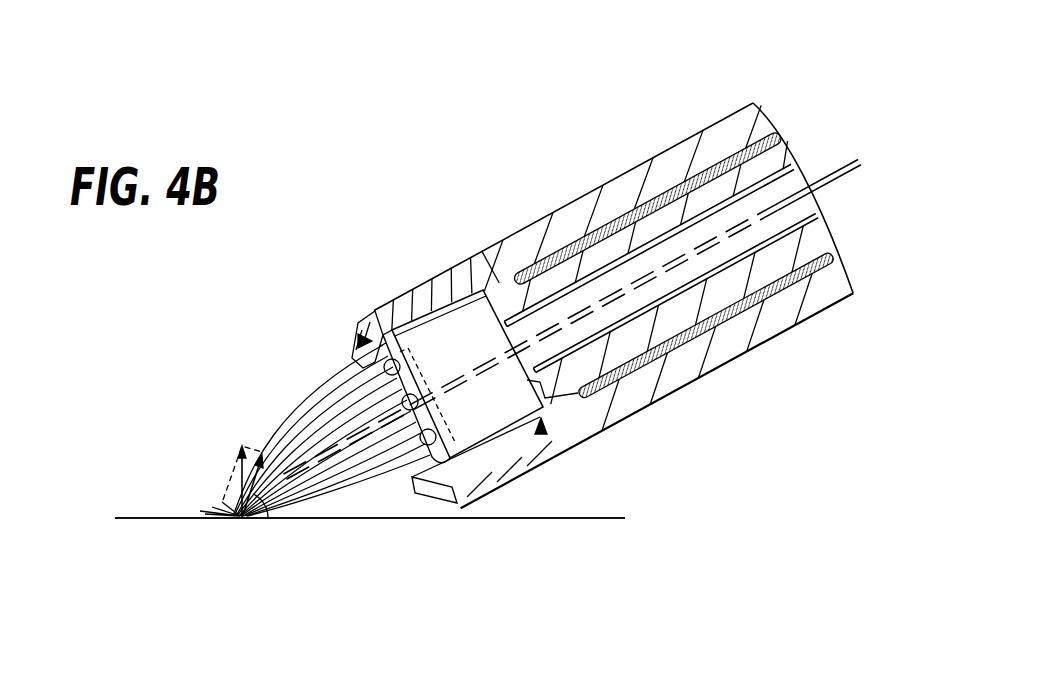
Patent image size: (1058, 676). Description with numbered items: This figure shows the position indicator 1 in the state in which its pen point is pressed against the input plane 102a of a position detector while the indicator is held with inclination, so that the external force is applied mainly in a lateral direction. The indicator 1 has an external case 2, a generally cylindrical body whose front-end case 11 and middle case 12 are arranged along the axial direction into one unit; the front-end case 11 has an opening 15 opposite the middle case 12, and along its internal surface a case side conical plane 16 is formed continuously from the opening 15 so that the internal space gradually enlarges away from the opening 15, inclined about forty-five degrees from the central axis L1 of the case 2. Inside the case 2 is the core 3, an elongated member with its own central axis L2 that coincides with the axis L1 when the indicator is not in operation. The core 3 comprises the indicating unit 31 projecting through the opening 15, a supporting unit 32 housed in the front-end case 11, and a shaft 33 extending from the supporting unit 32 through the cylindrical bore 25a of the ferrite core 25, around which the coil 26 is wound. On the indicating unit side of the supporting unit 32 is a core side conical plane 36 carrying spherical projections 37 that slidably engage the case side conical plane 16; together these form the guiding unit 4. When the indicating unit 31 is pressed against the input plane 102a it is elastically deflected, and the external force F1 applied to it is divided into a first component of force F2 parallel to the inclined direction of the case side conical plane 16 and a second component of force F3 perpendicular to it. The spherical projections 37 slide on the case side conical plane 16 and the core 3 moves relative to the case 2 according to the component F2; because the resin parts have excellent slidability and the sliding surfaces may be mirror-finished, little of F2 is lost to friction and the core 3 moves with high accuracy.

The position indicator 1 is at (452, 150).
The external case 2 is at (722, 105).
The core 3 is at (545, 441).
The guiding unit 4 is at (358, 341).
The front-end case 11 is at (418, 300).
The middle case 12 is at (630, 185).
The opening 15 is at (422, 495).
The case side conical plane 16 is at (370, 374).
The ferrite core 25 is at (700, 310).
The cylindrical bore 25a is at (642, 320).
The coil 26 is at (560, 245).
The indicating unit 31 is at (285, 425).
The supporting unit 32 is at (453, 305).
The shaft 33 is at (683, 248).
The core side conical plane 36 is at (405, 460).
The spherical projection 37 is at (362, 325).
The input plane 102a is at (157, 518).
The external force F1 is at (233, 470).
The first component of force F2 is at (262, 521).
The second component of force F3 is at (242, 521).
The central axis of the case L1 is at (815, 196).
The central axis of the core L2 is at (830, 175).